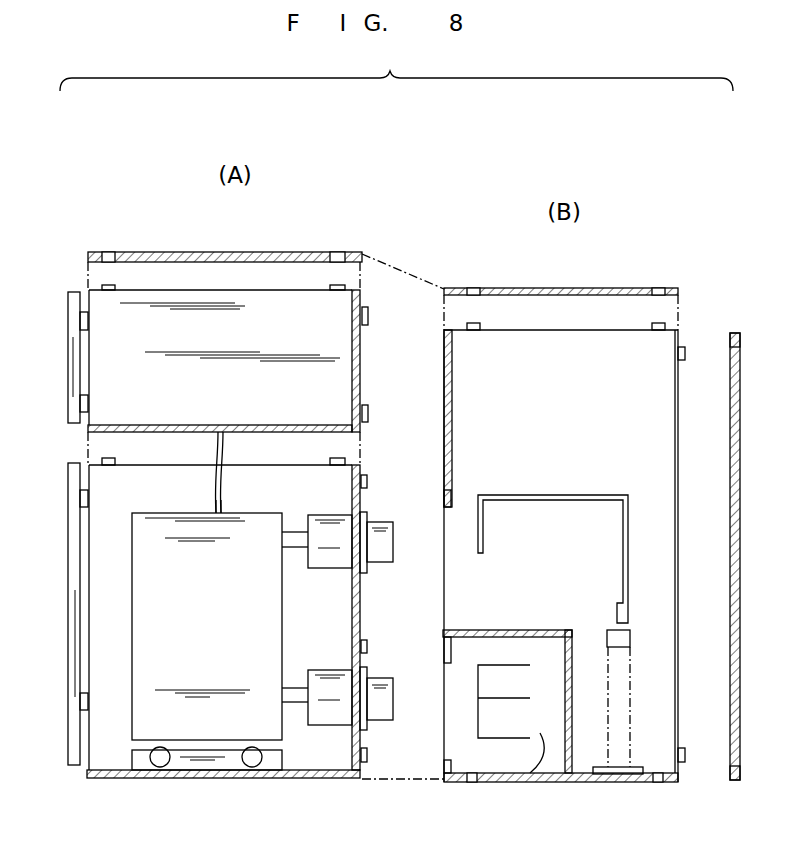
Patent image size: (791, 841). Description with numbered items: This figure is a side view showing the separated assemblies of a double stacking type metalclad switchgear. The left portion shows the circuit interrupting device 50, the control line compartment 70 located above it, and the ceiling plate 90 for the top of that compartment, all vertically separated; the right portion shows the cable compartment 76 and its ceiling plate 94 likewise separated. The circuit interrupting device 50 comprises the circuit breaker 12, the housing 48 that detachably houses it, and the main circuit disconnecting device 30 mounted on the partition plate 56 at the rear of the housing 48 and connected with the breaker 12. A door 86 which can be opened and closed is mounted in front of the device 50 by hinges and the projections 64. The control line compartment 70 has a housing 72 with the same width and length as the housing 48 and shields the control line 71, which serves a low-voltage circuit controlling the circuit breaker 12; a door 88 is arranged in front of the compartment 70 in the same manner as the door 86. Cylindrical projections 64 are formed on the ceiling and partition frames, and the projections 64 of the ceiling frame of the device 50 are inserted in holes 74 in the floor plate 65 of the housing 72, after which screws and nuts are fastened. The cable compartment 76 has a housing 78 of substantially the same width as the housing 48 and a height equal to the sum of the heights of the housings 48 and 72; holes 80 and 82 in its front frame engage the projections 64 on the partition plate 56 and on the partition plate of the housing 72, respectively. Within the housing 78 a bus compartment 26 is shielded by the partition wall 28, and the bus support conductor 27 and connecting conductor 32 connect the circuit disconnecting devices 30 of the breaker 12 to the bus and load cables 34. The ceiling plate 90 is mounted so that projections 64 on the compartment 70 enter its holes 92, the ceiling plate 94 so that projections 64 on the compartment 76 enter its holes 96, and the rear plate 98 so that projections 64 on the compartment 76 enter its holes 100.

The circuit breaker 12 is at (132, 645).
The bus compartment 26 is at (535, 775).
The bus support conductor 27 is at (514, 740).
The partition wall 28 is at (572, 740).
The main circuit disconnecting device 30 is at (326, 568).
The connecting conductor 32 is at (628, 522).
The bus and load cables 34 is at (632, 690).
The housing 48 is at (100, 752).
The circuit interrupting device 50 is at (66, 608).
The partition plate 56 is at (360, 594).
The cylindrical projections 64 is at (102, 285).
The floor plate 65 is at (214, 443).
The control line compartment 70 is at (65, 345).
The control line 71 is at (222, 497).
The housing 72 is at (180, 291).
The holes 74 is at (96, 434).
The cable compartment 76 is at (440, 568).
The housing 78 is at (678, 625).
The holes 80 is at (440, 494).
The holes 82 is at (444, 342).
The door 86 is at (68, 700).
The door 88 is at (65, 372).
The ceiling plate 90 is at (222, 252).
The holes 92 is at (108, 253).
The ceiling plate 94 is at (548, 288).
The holes 96 is at (472, 288).
The rear plate 98 is at (730, 450).
The holes 100 is at (730, 346).